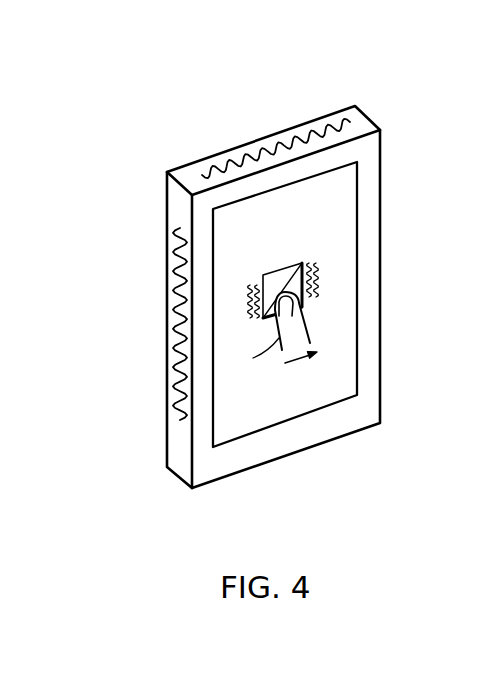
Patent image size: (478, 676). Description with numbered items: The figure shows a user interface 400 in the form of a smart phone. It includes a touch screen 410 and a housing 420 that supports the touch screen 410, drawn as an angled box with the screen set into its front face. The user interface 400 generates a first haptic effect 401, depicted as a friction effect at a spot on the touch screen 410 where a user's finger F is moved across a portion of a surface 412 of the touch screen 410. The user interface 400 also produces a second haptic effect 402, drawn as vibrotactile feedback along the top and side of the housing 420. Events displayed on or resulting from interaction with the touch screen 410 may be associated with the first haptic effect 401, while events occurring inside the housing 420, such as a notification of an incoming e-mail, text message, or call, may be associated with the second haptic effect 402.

The user interface 400 is at (269, 265).
The second haptic effect 402 is at (277, 127).
The touch screen 410 is at (327, 208).
The first haptic effect 401 is at (327, 273).
The housing 420 is at (368, 338).
The surface 412 is at (272, 417).